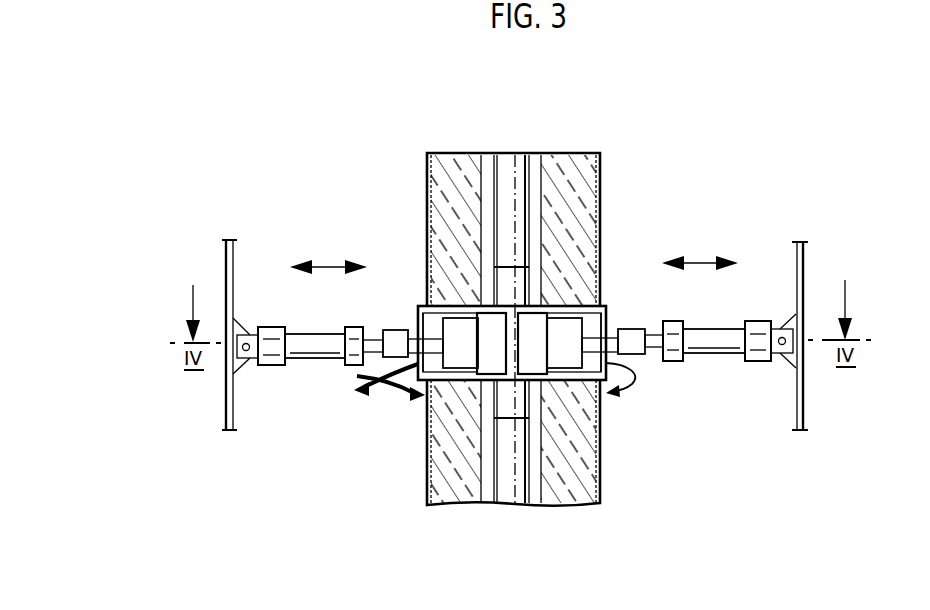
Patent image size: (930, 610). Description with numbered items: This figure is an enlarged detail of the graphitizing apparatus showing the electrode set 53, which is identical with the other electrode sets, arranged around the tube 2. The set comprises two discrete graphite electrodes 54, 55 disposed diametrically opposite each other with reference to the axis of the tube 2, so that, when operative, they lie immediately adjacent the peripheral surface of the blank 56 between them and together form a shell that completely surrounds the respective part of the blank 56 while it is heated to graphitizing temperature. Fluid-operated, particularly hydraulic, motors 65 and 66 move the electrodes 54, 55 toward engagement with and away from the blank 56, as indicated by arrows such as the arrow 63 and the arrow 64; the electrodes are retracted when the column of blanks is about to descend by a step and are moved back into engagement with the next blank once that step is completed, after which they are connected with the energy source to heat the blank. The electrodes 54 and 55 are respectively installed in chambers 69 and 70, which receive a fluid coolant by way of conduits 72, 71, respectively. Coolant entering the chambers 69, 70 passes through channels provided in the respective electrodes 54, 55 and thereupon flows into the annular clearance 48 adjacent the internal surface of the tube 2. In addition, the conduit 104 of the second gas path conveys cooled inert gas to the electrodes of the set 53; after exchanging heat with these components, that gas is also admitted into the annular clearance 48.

The tube 2 is at (605, 457).
The annular clearance 48 is at (485, 170).
The electrode set 53 is at (607, 306).
The graphite electrode 54 is at (421, 312).
The graphite electrode 55 is at (607, 409).
The blank 56 is at (520, 283).
The arrow 63 is at (330, 262).
The direction of movement arrow 64 is at (700, 260).
The fluid-operated motor 65 is at (310, 343).
The fluid-operated motor 66 is at (712, 338).
The chamber 69 is at (421, 326).
The chamber 70 is at (607, 320).
The conduit 71 is at (398, 400).
The conduit 72 is at (360, 378).
The conduit 104 is at (366, 397).